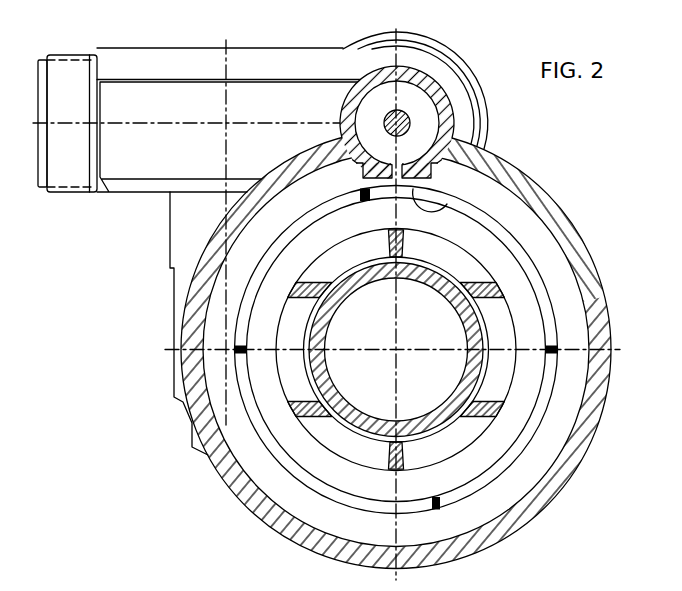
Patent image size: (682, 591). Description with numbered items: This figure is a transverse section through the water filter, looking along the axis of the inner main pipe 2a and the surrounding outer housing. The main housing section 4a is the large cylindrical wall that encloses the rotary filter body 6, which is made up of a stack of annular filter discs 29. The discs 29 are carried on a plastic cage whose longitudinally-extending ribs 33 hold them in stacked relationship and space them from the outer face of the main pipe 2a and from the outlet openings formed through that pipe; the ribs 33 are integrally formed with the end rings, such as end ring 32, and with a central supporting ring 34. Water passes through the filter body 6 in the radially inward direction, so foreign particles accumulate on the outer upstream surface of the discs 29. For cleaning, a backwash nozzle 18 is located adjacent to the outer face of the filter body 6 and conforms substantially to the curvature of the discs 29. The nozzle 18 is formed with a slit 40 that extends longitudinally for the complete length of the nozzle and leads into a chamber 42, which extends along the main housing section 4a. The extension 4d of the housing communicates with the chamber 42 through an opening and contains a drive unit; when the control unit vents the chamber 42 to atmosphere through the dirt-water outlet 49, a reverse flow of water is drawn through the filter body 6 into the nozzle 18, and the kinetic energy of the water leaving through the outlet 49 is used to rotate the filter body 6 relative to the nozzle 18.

The main pipe 2a is at (378, 281).
The main housing section 4a is at (573, 468).
The extension 4d is at (192, 58).
The filter body 6 is at (549, 276).
The backwash nozzle 18 is at (461, 195).
The annular filter discs 29 is at (517, 237).
The end ring 32 is at (557, 322).
The longitudinally-extending ribs 33 is at (403, 242).
The central supporting ring 34 is at (462, 262).
The slit 40 is at (398, 165).
The chamber 42 is at (420, 105).
The dirt-water outlet 49 is at (72, 70).